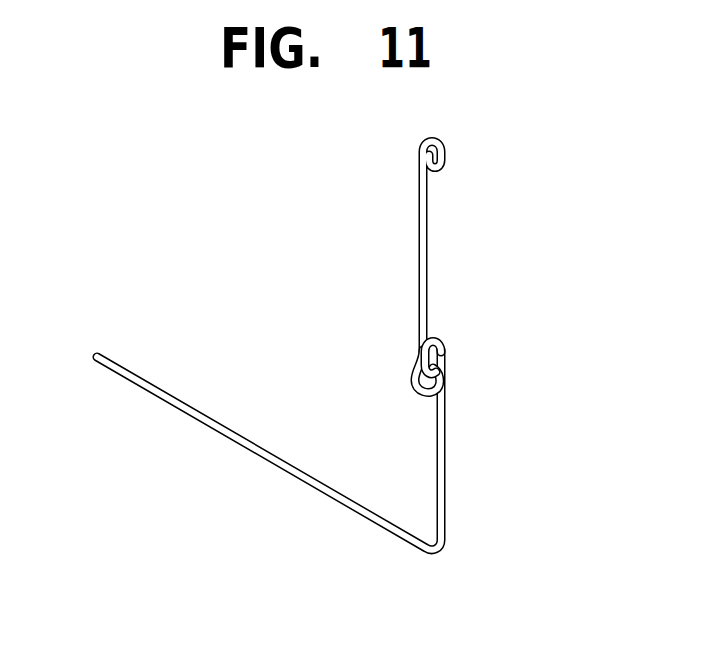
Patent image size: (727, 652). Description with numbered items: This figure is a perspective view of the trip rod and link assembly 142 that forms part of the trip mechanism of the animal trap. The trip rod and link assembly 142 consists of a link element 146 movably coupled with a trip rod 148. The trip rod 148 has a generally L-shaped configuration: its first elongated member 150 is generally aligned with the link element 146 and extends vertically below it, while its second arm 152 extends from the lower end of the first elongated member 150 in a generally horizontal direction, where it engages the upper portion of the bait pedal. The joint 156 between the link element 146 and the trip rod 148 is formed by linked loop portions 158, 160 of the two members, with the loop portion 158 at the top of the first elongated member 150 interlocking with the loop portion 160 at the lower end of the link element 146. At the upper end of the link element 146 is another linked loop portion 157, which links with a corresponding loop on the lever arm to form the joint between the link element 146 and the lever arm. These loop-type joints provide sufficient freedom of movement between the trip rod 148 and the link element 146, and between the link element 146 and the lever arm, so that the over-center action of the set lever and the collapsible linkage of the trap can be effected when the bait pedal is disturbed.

The trip rod and link assembly 142 is at (342, 336).
The link element 146 is at (485, 237).
The trip rod 148 is at (342, 448).
The first elongated member 150 is at (446, 425).
The second arm 152 is at (232, 428).
The joint 156 is at (442, 352).
The linked loop portion 157 is at (444, 142).
The linked loop portion 158 is at (442, 345).
The linked loop portion 160 is at (420, 387).